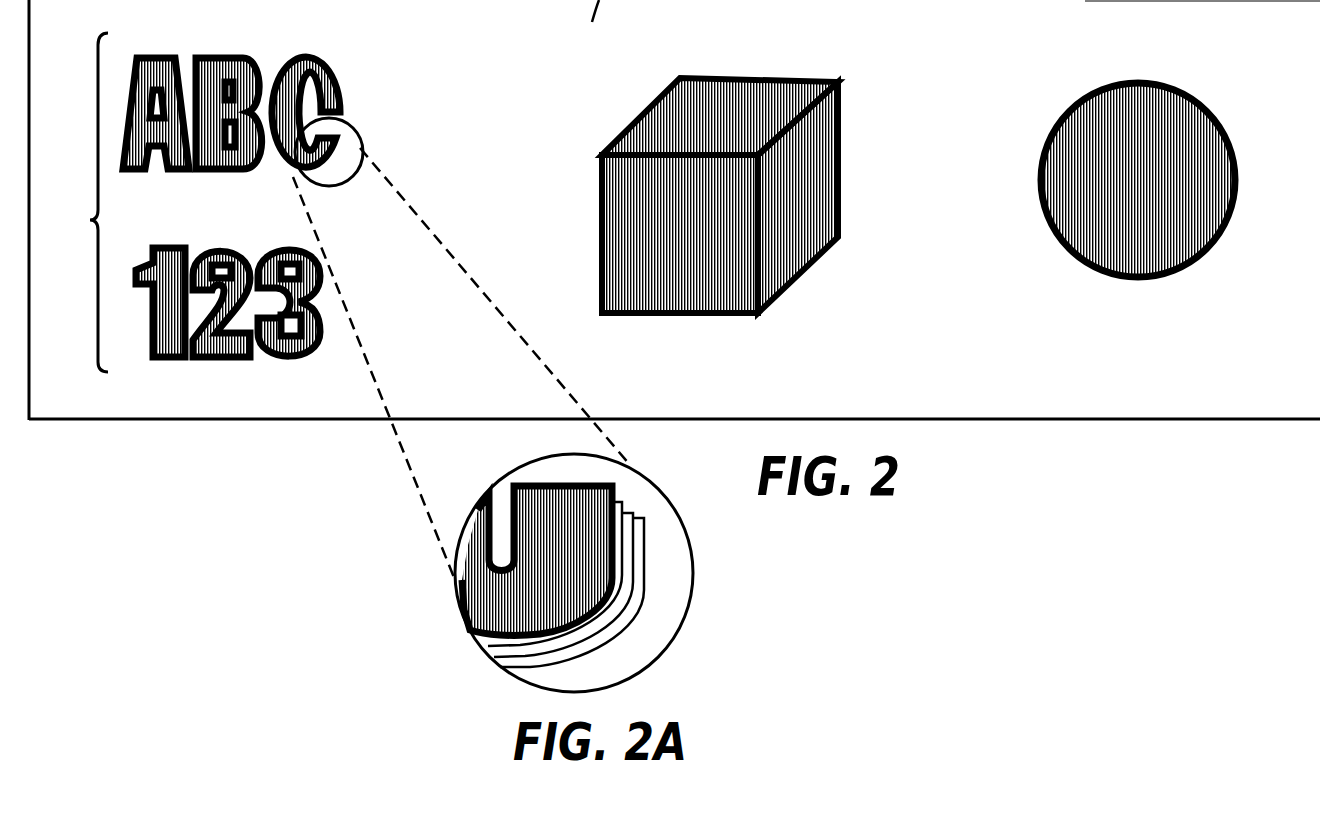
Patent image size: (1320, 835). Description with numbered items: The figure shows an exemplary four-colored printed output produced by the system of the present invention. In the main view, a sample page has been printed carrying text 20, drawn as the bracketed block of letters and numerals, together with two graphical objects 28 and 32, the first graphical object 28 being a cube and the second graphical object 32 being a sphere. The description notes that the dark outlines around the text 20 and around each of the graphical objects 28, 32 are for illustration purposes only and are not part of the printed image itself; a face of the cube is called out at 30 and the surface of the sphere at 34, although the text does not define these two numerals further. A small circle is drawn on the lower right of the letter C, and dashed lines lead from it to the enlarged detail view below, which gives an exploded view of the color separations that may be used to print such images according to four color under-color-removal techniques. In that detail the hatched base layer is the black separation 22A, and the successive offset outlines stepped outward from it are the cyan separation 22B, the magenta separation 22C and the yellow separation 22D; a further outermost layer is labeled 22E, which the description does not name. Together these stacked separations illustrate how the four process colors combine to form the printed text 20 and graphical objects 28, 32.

In FIG. 2, the text 20 is at (196, 202).
In FIG. 2A, the black color separation 22A is at (490, 607).
In FIG. 2A, the cyan color separation 22B is at (484, 648).
In FIG. 2A, the magenta color separation 22C is at (496, 663).
In FIG. 2A, the yellow color separation 22D is at (610, 630).
In FIG. 2A, the fifth layer 22E is at (625, 572).
In FIG. 2, the graphical object 28 is at (680, 195).
In FIG. 2, the face of cube 30 is at (633, 245).
In FIG. 2, the graphical object 32 is at (1127, 185).
In FIG. 2, the surface of sphere 34 is at (1178, 245).